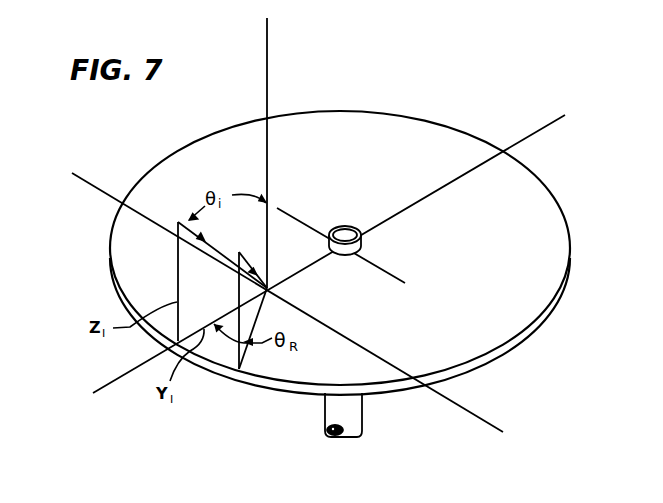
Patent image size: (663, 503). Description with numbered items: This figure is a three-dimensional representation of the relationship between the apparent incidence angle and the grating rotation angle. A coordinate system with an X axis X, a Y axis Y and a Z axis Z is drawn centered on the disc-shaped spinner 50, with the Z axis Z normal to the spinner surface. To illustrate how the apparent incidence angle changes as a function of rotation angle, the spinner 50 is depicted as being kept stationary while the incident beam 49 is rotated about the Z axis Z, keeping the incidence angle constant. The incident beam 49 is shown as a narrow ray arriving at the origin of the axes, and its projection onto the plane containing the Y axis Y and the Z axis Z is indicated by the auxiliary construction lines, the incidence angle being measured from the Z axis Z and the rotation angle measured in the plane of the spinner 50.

The incident beam 49 is at (239, 268).
The spinner 50 is at (548, 186).
The X axis X is at (280, 299).
The Y axis Y is at (319, 260).
The Z axis Z is at (278, 153).